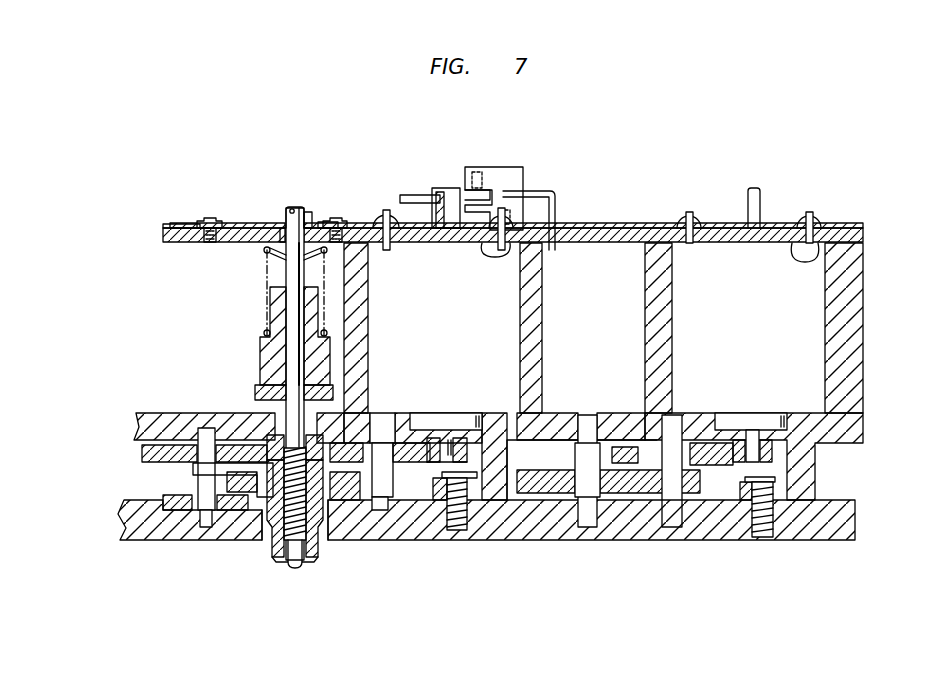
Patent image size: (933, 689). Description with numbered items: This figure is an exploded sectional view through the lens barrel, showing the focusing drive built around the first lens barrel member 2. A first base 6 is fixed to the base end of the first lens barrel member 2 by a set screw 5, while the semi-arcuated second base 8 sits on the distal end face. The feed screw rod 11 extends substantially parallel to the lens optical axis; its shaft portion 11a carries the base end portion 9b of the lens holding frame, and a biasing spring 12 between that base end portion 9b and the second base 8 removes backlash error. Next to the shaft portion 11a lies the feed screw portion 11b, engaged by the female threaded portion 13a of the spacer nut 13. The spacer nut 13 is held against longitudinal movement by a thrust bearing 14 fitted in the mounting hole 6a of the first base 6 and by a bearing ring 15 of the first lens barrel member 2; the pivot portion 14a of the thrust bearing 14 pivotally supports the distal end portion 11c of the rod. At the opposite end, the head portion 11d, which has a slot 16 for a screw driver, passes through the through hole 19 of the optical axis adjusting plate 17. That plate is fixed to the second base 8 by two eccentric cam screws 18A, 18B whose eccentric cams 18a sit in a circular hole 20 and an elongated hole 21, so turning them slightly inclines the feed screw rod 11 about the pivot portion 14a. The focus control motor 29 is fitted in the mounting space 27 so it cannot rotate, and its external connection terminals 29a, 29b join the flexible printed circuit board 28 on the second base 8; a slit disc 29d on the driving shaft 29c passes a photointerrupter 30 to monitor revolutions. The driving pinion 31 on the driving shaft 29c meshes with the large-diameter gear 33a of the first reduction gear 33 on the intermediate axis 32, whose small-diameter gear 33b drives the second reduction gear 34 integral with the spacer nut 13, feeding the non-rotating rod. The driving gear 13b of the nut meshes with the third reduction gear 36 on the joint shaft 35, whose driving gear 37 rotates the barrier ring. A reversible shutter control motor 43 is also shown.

The first lens barrel member 2 is at (848, 328).
The set screw 5 is at (470, 505).
The first base 6 is at (655, 522).
The mounting hole 6a is at (265, 520).
The second base 8 is at (163, 236).
The base end portion 9b is at (273, 353).
The feed screw rod 11 is at (290, 405).
The shaft portion 11a is at (293, 301).
The feed screw portion 11b is at (282, 505).
The distal end portion 11c is at (296, 568).
The head portion 11d is at (290, 208).
The biasing spring 12 is at (290, 255).
The spacer nut 13 is at (330, 505).
The female threaded portion 13a is at (205, 517).
The driving gear 13b is at (213, 477).
The thrust bearing 14 is at (318, 530).
The pivot portion 14a is at (278, 562).
The bearing ring 15 is at (255, 413).
The slot 16 is at (288, 215).
The optical axis adjusting plate 17 is at (250, 222).
The eccentric cams 18a is at (202, 220).
The eccentric cam screw 18A is at (214, 220).
The eccentric cam screw 18B is at (327, 221).
The through hole 19 is at (298, 206).
The circular hole 20 is at (180, 226).
The elongated hole 21 is at (338, 223).
The mounting space 27 is at (575, 243).
The flexible printed circuit board 28 is at (663, 228).
The focus control motor 29 is at (507, 360).
The external connection terminal 29a is at (360, 223).
The external connection terminal 29b is at (505, 200).
The driving shaft 29c is at (433, 222).
The slit disc 29d is at (467, 192).
The photointerrupter 30 is at (514, 173).
The driving pinion 31 is at (540, 490).
The intermediate axis 32 is at (394, 463).
The first reduction gear 33 is at (457, 482).
The large-diameter gear 33a is at (462, 465).
The small-diameter gear 33b is at (430, 458).
The second reduction gear 34 is at (384, 487).
The joint shaft 35 is at (200, 487).
The third reduction gear 36 is at (147, 450).
The driving gear 37 is at (172, 507).
The shutter control motor 43 is at (813, 287).